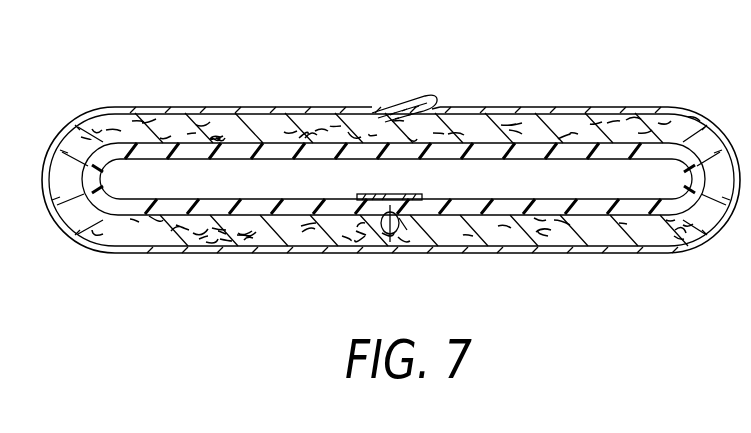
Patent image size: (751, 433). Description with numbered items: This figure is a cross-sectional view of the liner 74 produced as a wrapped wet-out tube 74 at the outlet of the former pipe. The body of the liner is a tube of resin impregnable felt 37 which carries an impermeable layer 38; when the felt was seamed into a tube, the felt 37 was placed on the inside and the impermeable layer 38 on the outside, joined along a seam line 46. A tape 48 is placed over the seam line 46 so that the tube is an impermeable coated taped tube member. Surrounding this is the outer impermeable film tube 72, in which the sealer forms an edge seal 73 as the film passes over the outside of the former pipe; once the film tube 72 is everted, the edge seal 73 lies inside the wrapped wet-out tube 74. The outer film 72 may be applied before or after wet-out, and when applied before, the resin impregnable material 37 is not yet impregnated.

The wrapped wet-out tube 74 is at (689, 92).
The film tube 72 is at (133, 108).
The edge seal 73 is at (415, 96).
The felt 37 is at (89, 239).
The impermeable layer 38 is at (248, 212).
The tape 48 is at (362, 190).
The seam line 46 is at (407, 226).